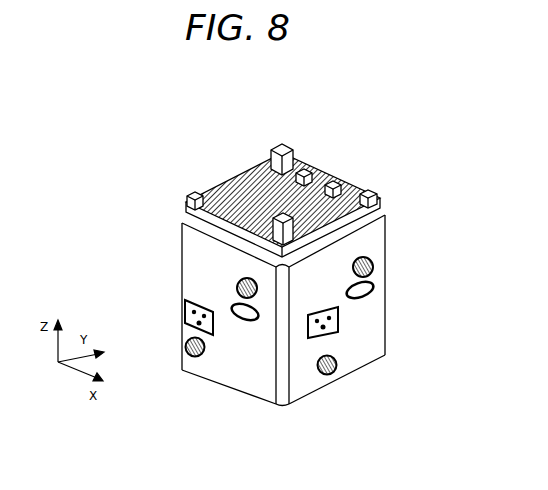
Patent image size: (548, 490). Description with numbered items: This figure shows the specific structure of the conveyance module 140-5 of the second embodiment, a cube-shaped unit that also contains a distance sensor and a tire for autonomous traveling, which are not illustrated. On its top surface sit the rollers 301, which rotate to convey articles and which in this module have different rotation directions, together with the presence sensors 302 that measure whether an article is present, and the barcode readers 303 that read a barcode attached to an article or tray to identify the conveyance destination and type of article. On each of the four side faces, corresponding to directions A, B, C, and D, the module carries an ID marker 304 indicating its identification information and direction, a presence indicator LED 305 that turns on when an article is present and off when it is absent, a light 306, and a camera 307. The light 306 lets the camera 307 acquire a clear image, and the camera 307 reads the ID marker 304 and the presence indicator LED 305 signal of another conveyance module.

The conveyance module 140-5 is at (390, 149).
The rollers 301 is at (269, 174).
The presence sensors 302 is at (291, 143).
The barcode readers 303 is at (185, 200).
The ID markers 304 is at (270, 318).
The presence indicator LED 305 is at (241, 376).
The light 306 is at (290, 271).
The camera 307 is at (287, 297).